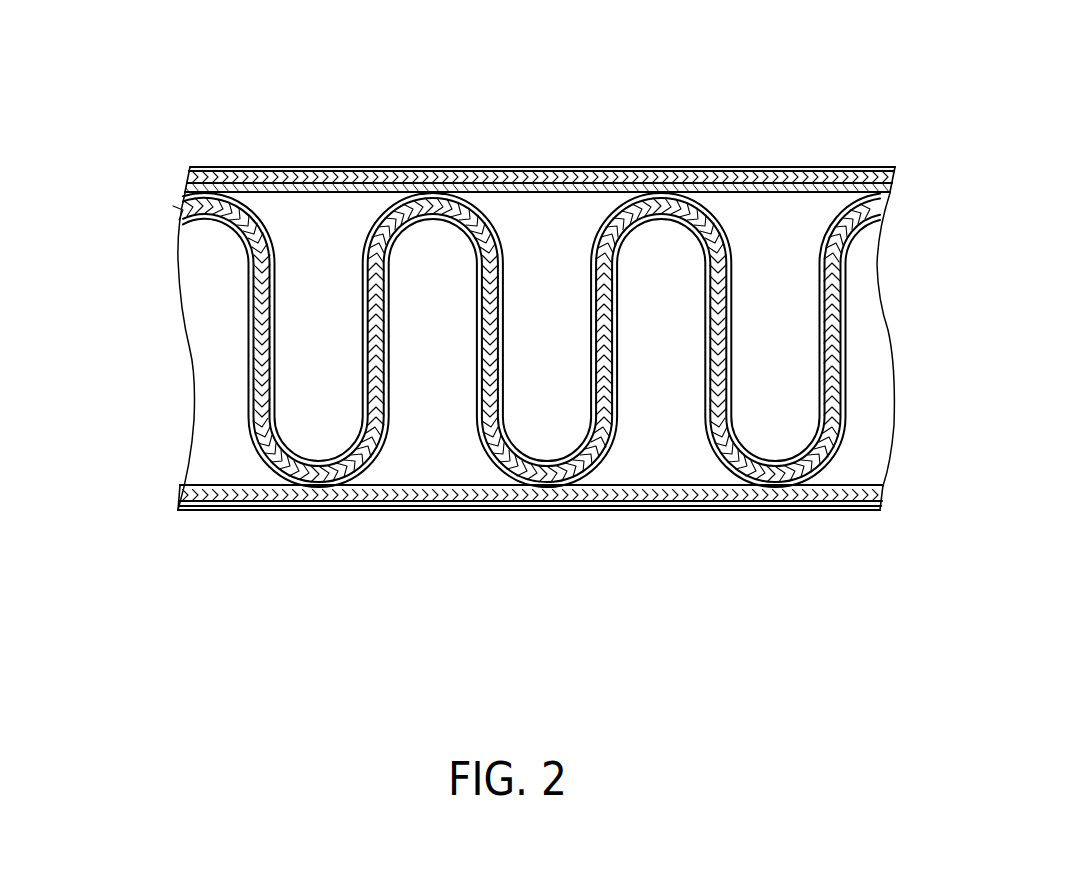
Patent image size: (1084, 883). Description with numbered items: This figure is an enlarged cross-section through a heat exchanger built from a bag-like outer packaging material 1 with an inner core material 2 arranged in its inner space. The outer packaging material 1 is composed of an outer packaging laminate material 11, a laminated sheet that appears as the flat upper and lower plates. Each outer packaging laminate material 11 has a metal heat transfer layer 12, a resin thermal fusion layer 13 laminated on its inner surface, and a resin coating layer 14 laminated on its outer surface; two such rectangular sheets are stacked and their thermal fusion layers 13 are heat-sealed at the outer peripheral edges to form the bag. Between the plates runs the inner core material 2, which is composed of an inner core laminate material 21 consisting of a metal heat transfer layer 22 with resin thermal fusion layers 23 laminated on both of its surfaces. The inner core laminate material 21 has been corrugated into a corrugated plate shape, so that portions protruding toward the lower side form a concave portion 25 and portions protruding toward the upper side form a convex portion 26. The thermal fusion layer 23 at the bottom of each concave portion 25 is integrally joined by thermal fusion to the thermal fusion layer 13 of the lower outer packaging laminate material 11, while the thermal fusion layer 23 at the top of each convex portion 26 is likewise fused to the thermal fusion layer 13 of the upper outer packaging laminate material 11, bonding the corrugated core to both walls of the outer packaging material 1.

The outer packaging material 1 is at (775, 154).
The outer packaging laminate material 11 is at (610, 52).
The heat transfer layer 12 is at (533, 182).
The thermal fusion layer 13 is at (568, 193).
The coating layer 14 is at (507, 170).
The inner core material 2 is at (856, 325).
The inner core laminate material 21 is at (113, 265).
The heat transfer layer 22 is at (262, 357).
The thermal fusion layer 23 is at (270, 322).
The concave portion 25 is at (563, 490).
The convex portion 26 is at (428, 194).